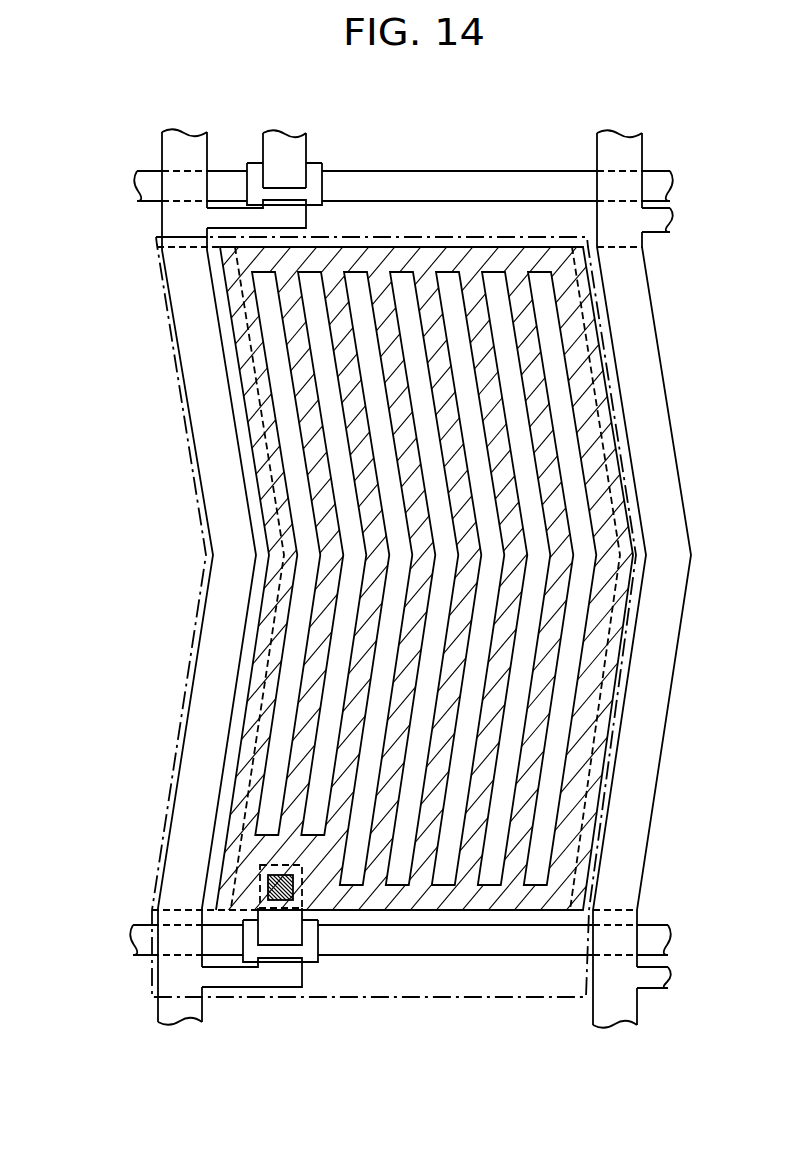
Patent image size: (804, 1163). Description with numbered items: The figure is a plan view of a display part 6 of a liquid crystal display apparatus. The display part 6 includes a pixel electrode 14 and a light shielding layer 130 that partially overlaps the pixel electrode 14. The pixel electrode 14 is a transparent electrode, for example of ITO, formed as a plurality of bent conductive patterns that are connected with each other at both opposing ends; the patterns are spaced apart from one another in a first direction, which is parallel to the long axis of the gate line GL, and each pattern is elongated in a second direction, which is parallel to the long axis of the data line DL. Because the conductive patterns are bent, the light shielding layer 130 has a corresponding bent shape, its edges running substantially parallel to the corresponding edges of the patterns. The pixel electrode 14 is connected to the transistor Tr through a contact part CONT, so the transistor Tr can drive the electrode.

The gate line GL is at (433, 172).
The data line DL is at (210, 455).
The light shielding layer 130 is at (187, 247).
The pixel electrode 14 is at (240, 308).
The contact part CONT is at (268, 880).
The transistor Tr is at (313, 938).
The display part 6 is at (522, 997).